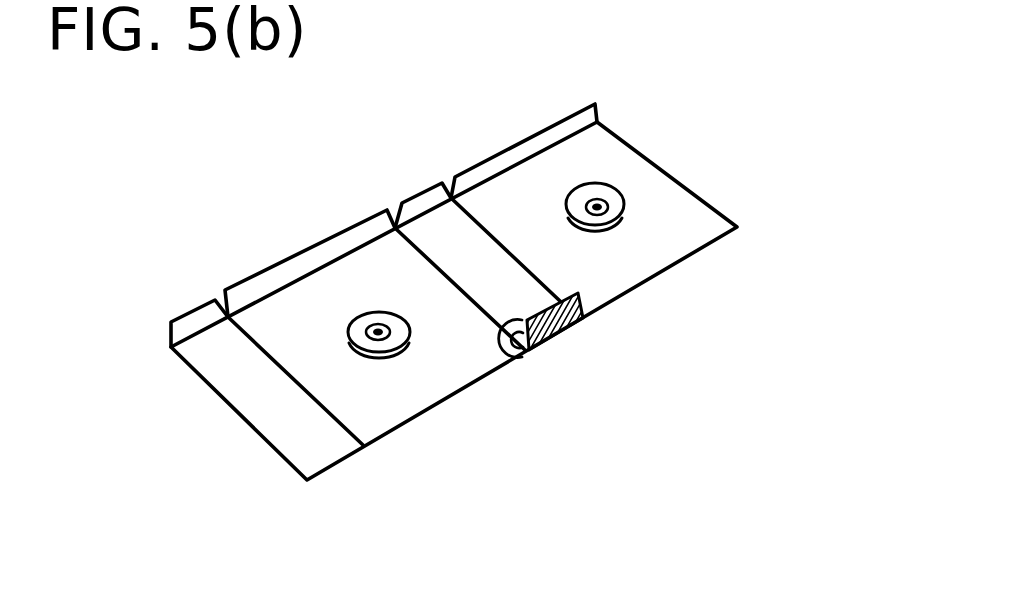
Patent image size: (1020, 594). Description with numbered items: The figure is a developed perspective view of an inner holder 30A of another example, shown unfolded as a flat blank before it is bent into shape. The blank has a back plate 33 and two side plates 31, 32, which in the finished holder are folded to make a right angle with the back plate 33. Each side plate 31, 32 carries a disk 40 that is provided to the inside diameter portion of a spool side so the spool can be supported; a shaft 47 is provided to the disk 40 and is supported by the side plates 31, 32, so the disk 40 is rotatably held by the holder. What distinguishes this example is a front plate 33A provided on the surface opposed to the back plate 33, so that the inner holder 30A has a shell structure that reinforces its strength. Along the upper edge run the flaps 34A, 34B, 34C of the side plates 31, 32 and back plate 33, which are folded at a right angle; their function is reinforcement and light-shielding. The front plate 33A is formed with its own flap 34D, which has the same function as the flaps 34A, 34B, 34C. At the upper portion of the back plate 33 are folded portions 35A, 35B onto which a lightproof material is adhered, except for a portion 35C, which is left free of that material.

The inner holder 30A is at (490, 410).
The side plate 31 is at (650, 257).
The side plate 32 is at (423, 388).
The back plate 33 is at (477, 240).
The front plate 33A is at (288, 425).
The flap 34A is at (510, 160).
The flap 34B is at (308, 258).
The flap 34C is at (418, 198).
The flap 34D is at (193, 322).
The folded portion 35A is at (582, 316).
The folded portion 35B is at (518, 360).
The portion 35C is at (528, 357).
The disk 40 is at (617, 186).
The shaft 47 is at (607, 204).